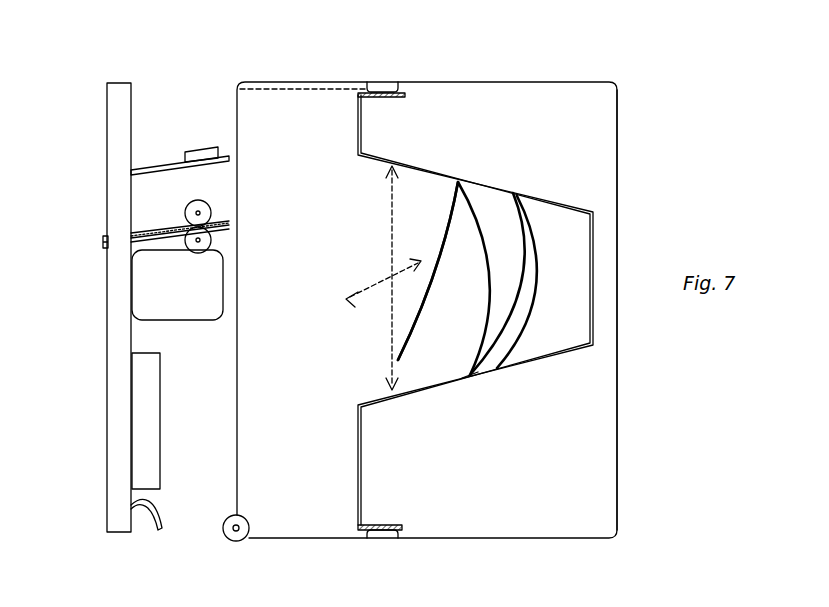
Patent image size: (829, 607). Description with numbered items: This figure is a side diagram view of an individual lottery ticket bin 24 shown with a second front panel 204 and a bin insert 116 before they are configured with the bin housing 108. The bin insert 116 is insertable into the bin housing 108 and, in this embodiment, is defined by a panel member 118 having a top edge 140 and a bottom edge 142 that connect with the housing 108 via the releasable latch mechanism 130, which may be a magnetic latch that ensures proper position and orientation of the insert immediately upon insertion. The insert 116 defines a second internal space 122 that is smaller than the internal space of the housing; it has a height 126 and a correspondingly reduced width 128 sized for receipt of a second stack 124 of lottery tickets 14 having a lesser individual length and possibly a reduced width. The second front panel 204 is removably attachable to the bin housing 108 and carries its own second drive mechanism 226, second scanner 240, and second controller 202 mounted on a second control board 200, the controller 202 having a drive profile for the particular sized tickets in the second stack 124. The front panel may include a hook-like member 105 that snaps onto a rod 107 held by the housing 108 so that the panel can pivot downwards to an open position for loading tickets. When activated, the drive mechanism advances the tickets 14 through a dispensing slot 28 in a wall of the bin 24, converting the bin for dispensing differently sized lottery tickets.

The second front panel 204 is at (107, 153).
The dispensing slot 28 is at (104, 240).
The second control board 200 is at (165, 165).
The second controller 202 is at (203, 150).
The second drive mechanism 226 is at (213, 321).
The second scanner 240 is at (160, 440).
The hook-like member 105 is at (155, 530).
The rod 107 is at (238, 541).
The bin 24 is at (516, 78).
The bin housing 108 is at (617, 162).
The latch mechanism 130 is at (392, 82).
The top edge 140 is at (395, 97).
The bottom edge 142 is at (392, 522).
The bin insert 116 is at (353, 491).
The lottery tickets 14 is at (455, 210).
The second internal space 122 is at (455, 331).
The second stack 124 is at (530, 320).
The panel member 118 is at (465, 380).
The height 126 is at (390, 243).
The reduced width 128 is at (388, 280).